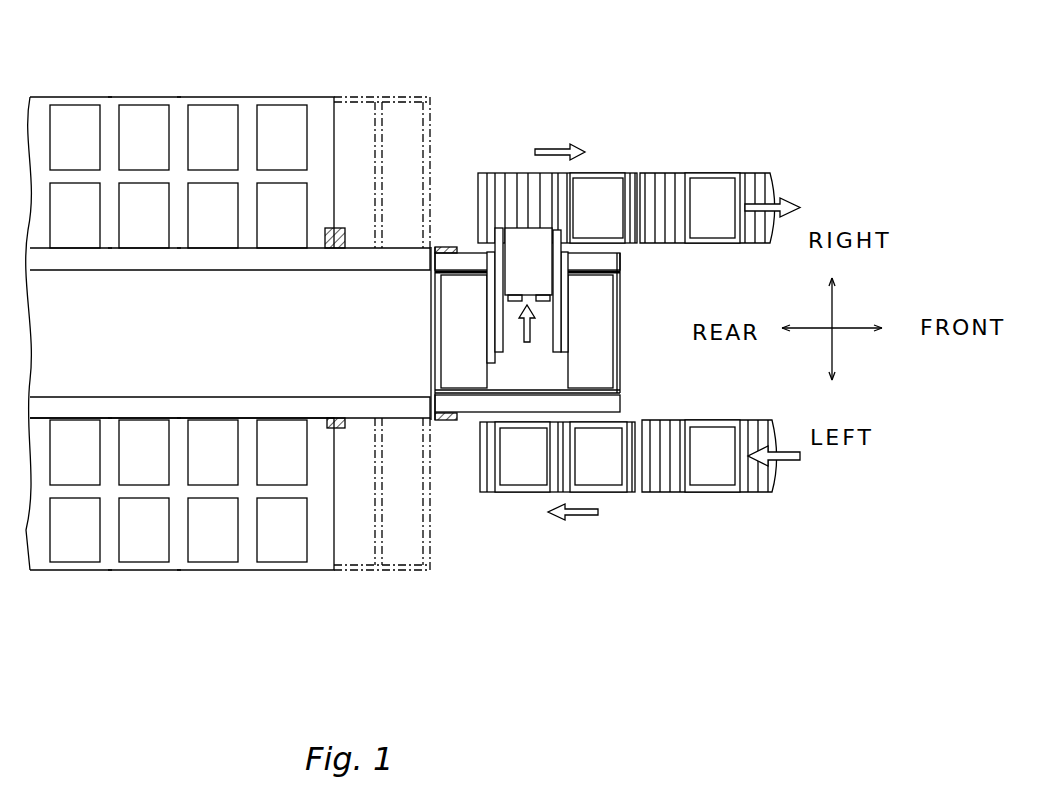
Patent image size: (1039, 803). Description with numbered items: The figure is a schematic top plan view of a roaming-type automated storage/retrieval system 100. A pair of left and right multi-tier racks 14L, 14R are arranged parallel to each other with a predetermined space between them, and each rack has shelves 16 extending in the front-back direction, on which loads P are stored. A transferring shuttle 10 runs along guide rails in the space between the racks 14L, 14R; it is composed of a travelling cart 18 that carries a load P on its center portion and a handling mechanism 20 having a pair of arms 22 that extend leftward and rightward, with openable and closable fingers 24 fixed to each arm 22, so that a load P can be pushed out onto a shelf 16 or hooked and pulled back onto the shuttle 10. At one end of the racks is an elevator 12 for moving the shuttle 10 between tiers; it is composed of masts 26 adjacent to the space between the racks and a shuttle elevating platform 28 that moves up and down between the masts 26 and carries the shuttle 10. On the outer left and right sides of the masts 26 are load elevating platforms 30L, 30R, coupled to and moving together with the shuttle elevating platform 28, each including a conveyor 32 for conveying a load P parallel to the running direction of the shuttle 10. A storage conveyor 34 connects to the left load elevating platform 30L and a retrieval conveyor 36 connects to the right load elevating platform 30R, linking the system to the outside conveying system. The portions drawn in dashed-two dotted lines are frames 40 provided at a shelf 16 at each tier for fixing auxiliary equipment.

The automated storage/retrieval system 100 is at (790, 76).
The transferring shuttle 10 is at (440, 321).
The elevator 12 is at (475, 420).
The right multi-tier rack 14R is at (285, 97).
The left multi-tier rack 14L is at (285, 572).
The shelves 16 is at (178, 108).
The travelling cart 18 is at (465, 343).
The handling mechanism 20 is at (488, 358).
The arms 22 is at (557, 352).
The fingers 24 is at (505, 305).
The masts 26 is at (445, 246).
The shuttle elevating platform 28 is at (620, 370).
The right load elevating platform 30R is at (494, 173).
The left load elevating platform 30L is at (612, 492).
The conveyor 32 is at (510, 173).
The storage conveyor 34 is at (745, 492).
The retrieval conveyor 36 is at (740, 173).
The frame 40 is at (370, 96).
The load P is at (72, 120).